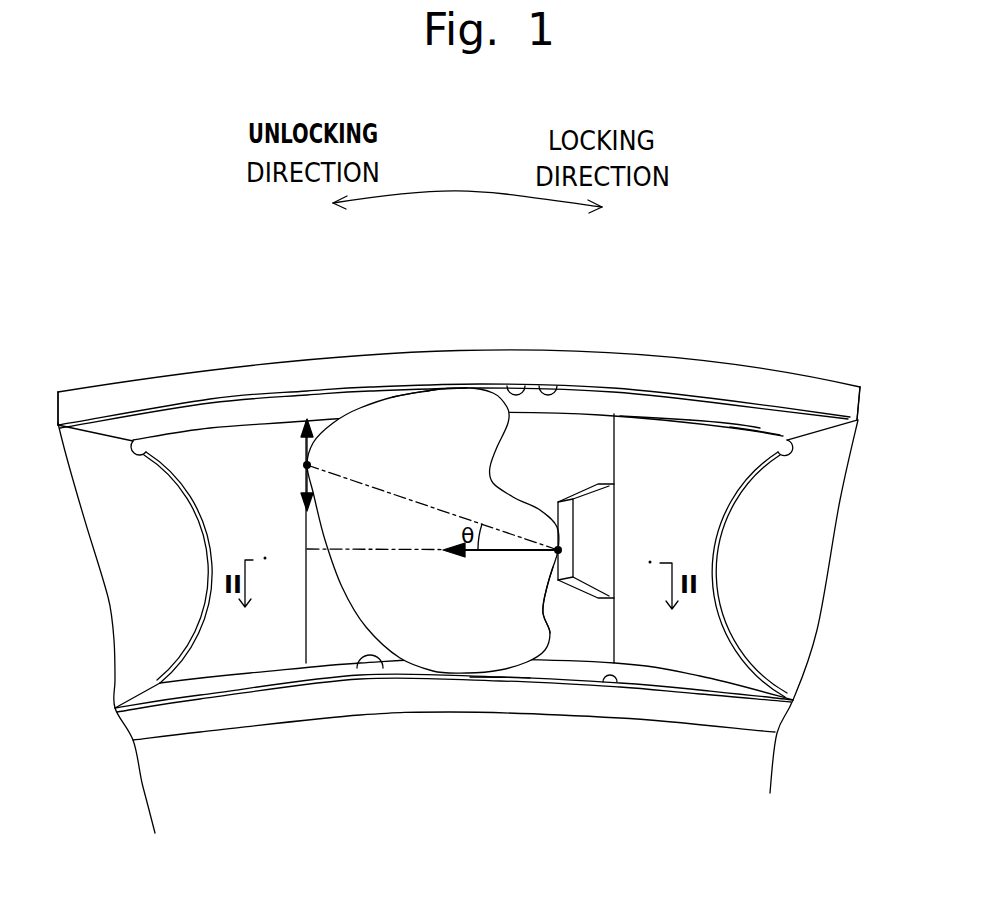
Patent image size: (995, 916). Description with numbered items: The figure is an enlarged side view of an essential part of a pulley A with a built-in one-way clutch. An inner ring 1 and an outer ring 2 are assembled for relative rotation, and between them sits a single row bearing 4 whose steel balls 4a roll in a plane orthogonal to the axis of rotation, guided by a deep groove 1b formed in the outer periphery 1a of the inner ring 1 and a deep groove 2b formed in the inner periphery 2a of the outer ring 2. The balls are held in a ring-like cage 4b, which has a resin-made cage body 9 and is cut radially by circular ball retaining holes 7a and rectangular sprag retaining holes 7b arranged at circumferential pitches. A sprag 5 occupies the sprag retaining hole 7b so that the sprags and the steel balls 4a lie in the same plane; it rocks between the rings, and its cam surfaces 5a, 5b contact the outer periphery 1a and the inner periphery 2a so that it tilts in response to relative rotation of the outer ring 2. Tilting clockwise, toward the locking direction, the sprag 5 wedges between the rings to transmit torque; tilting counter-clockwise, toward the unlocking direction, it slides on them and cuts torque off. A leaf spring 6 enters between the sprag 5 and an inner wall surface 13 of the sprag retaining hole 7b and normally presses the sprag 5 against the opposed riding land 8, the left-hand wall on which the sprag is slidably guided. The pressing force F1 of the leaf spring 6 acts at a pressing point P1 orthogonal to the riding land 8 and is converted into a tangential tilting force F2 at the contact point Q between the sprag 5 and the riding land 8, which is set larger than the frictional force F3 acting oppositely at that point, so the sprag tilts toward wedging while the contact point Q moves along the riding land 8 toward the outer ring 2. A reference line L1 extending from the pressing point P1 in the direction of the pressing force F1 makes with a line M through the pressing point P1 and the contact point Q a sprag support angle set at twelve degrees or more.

The inner ring 1 is at (786, 718).
The outer periphery of the inner ring 1a is at (357, 670).
The deep groove of the inner ring 1b is at (610, 684).
The outer ring 2 is at (861, 402).
The inner periphery of the outer ring 2a is at (549, 382).
The deep groove of the outer ring 2b is at (517, 380).
The single row bearing 4 is at (646, 419).
The steel balls 4a is at (103, 430).
The cage 4b is at (694, 421).
The sprag 5 is at (362, 410).
The cam surface 5a is at (403, 394).
The cam surface 5b is at (500, 679).
The leaf spring 6 is at (580, 492).
The ball retaining hole 7a is at (133, 440).
The sprag retaining hole 7b is at (600, 641).
The riding land 8 is at (312, 622).
The cage body 9 is at (738, 428).
The inner wall surface of the sprag retaining hole 13 is at (616, 442).
The pulley with a built-in one-way clutch A is at (160, 163).
The contact point Q is at (303, 465).
The pressing point P1 is at (557, 547).
The pressing force F1 is at (490, 552).
The tangential tilting force F2 is at (303, 437).
The frictional force F3 is at (303, 495).
The line M is at (381, 488).
The reference line L1 is at (401, 551).